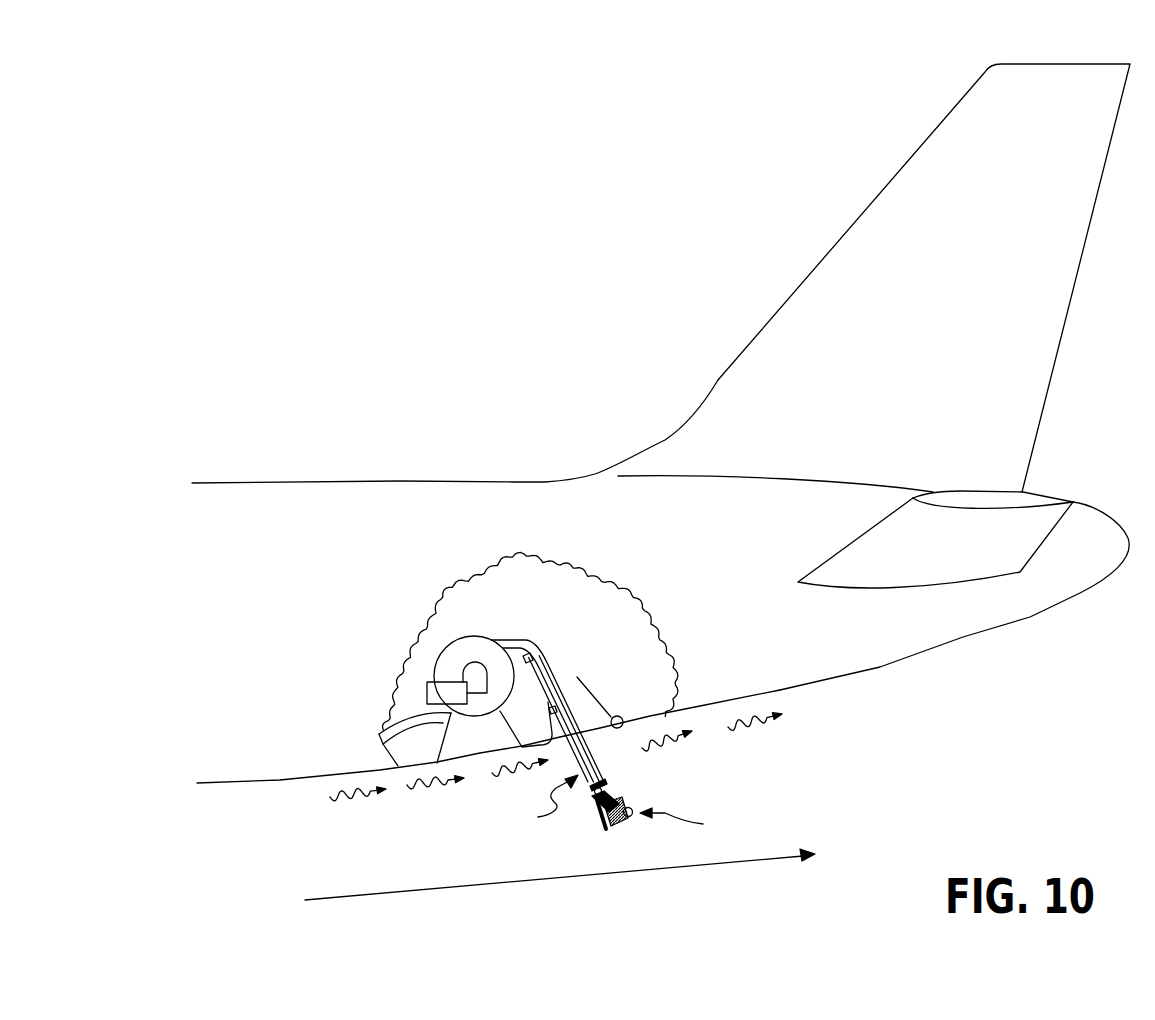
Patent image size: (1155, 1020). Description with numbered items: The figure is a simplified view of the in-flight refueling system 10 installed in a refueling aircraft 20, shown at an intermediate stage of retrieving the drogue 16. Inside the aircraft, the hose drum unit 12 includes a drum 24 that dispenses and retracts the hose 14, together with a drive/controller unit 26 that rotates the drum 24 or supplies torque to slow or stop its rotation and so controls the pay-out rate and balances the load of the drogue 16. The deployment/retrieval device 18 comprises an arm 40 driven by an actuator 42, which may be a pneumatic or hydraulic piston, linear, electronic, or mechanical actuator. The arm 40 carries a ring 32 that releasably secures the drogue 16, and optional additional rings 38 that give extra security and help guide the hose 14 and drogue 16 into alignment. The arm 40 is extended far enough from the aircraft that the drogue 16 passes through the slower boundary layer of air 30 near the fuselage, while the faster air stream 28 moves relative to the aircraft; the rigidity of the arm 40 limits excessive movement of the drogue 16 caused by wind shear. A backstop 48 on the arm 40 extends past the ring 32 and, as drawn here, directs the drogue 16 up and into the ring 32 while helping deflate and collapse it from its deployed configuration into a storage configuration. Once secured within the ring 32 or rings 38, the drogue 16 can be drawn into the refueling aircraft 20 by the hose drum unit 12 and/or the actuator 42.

The in-flight refueling system 10 is at (638, 314).
The hose drum unit 12 is at (473, 618).
The hose 14 is at (533, 641).
The drogue 16 is at (625, 797).
The deployment/retrieval device 18 is at (544, 803).
The refueling aircraft 20 is at (516, 483).
The drum 24 is at (493, 638).
The drive/controller unit 26 is at (446, 686).
The air stream 28 is at (546, 888).
The boundary layer of air 30 is at (764, 740).
The ring 32 is at (686, 823).
The additional rings 38 is at (612, 793).
The arm 40 is at (597, 828).
The actuator 42 is at (547, 663).
The backstop 48 is at (610, 825).